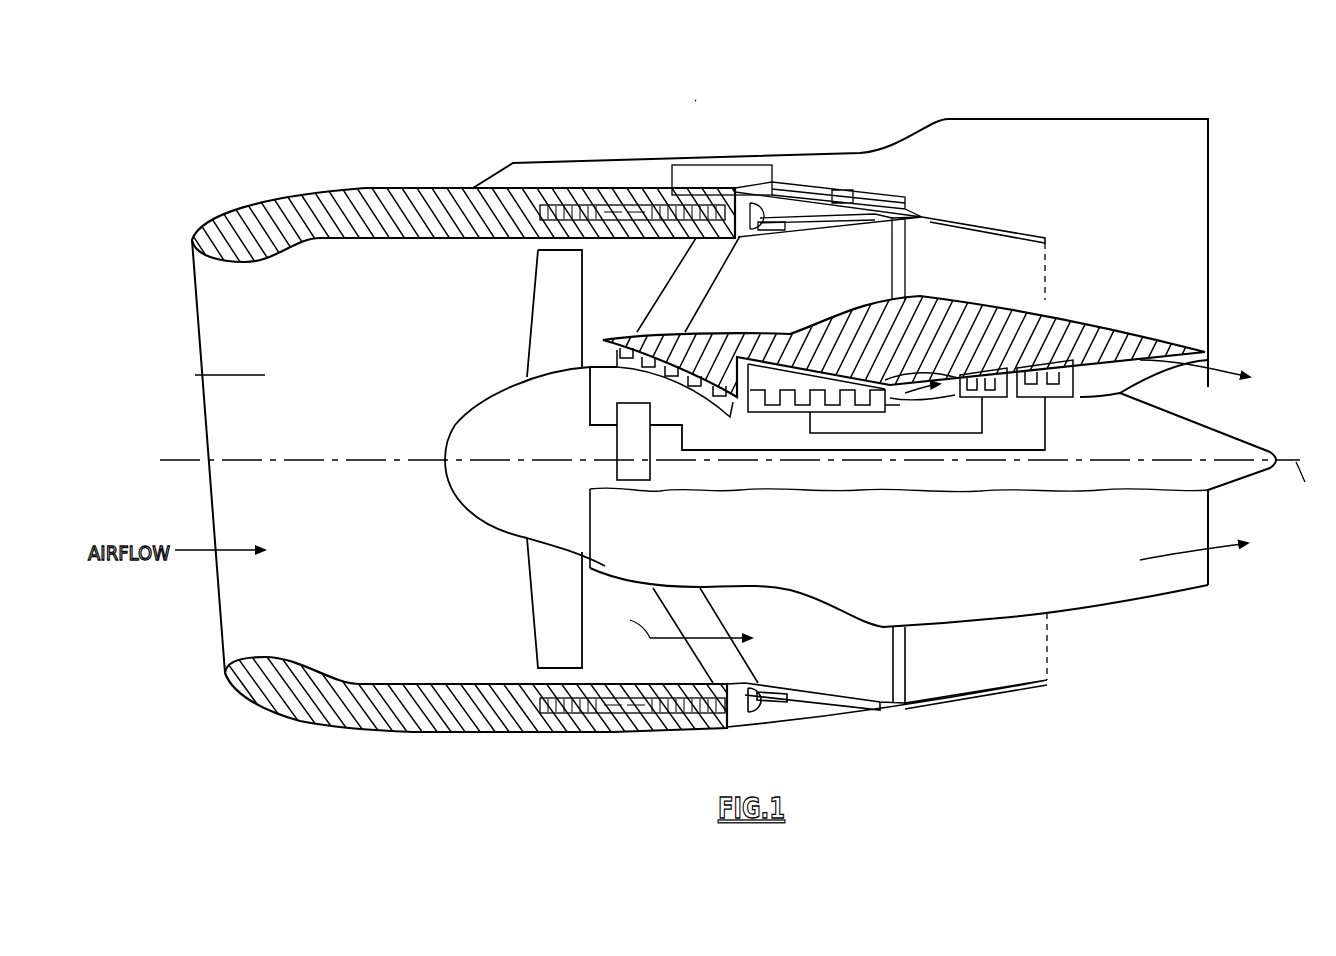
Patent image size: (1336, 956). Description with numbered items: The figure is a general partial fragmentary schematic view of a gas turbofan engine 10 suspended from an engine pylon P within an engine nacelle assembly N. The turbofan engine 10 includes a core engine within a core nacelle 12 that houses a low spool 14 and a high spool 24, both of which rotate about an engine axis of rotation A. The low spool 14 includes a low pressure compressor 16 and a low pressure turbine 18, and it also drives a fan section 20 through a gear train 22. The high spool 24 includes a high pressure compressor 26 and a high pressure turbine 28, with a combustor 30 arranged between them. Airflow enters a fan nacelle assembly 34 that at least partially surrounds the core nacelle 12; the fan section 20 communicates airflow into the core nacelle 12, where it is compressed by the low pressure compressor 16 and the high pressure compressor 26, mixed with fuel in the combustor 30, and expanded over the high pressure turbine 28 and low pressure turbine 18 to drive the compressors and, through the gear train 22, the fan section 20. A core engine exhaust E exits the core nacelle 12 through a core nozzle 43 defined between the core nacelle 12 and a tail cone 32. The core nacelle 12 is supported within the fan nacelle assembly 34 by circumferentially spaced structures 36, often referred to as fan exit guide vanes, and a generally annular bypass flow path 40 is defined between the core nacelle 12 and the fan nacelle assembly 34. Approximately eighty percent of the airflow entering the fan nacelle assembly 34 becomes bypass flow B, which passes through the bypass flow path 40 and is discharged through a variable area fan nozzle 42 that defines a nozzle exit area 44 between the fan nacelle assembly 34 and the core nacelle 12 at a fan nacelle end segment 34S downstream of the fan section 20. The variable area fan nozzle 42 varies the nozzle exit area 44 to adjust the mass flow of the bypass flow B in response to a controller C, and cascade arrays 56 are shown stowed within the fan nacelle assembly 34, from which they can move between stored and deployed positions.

The gas turbofan engine 10 is at (395, 147).
The core nacelle 12 is at (1052, 330).
The low spool 14 is at (868, 457).
The low pressure compressor 16 is at (708, 402).
The low pressure turbine 18 is at (1058, 398).
The fan section 20 is at (538, 605).
The gear train 22 is at (628, 460).
The high spool 24 is at (845, 437).
The high pressure compressor 26 is at (790, 395).
The high pressure turbine 28 is at (1000, 397).
The combustor 30 is at (933, 403).
The tail cone 32 is at (1208, 433).
The fan nacelle assembly 34 is at (625, 186).
The fan nacelle end segment 34S is at (1022, 236).
The circumferentially spaced structures (Fan Exit Guide Vanes) 36 is at (709, 294).
The bypass flow path 40 is at (641, 278).
The variable area fan nozzle 42 is at (805, 732).
The core nozzle 43 is at (1208, 360).
The nozzle exit area 44 is at (1043, 290).
The cascade arrays 56 is at (566, 205).
The engine nacelle assembly N is at (677, 132).
The controller C is at (728, 165).
The engine pylon P is at (1182, 188).
The engine axis of rotation A is at (1308, 483).
The bypass flow B is at (631, 619).
The core engine exhaust E is at (1208, 578).